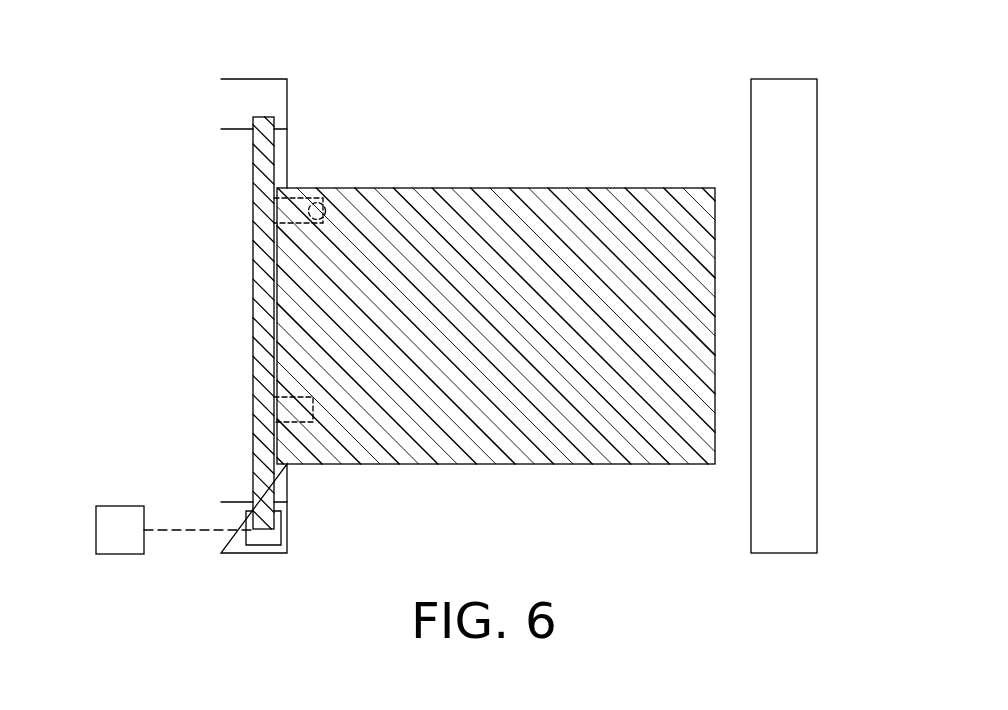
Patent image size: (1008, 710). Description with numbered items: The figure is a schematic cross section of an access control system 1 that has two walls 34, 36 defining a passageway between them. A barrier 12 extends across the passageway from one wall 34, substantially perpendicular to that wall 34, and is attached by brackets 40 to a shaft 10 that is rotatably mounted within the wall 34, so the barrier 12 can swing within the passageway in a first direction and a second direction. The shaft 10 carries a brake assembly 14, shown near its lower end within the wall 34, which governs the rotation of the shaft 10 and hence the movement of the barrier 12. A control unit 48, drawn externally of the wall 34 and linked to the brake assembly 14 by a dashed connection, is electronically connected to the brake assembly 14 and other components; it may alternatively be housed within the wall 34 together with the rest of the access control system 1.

The access control system 1 is at (705, 63).
The shaft 10 is at (262, 166).
The barrier 12 is at (597, 188).
The brake assembly 14 is at (263, 537).
The wall 34 is at (276, 97).
The wall 36 is at (803, 135).
The brackets 40 is at (310, 210).
The control unit 48 is at (100, 530).